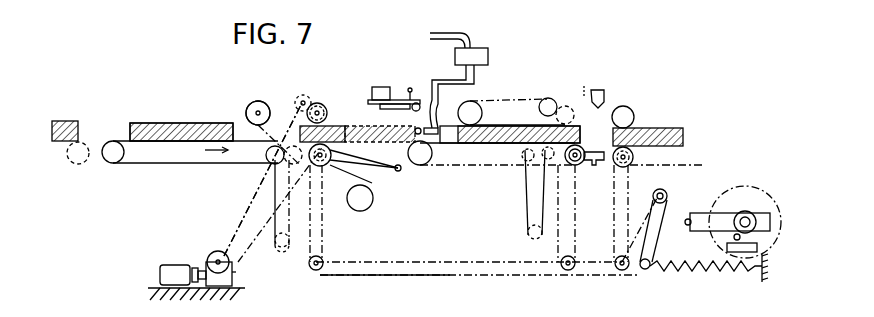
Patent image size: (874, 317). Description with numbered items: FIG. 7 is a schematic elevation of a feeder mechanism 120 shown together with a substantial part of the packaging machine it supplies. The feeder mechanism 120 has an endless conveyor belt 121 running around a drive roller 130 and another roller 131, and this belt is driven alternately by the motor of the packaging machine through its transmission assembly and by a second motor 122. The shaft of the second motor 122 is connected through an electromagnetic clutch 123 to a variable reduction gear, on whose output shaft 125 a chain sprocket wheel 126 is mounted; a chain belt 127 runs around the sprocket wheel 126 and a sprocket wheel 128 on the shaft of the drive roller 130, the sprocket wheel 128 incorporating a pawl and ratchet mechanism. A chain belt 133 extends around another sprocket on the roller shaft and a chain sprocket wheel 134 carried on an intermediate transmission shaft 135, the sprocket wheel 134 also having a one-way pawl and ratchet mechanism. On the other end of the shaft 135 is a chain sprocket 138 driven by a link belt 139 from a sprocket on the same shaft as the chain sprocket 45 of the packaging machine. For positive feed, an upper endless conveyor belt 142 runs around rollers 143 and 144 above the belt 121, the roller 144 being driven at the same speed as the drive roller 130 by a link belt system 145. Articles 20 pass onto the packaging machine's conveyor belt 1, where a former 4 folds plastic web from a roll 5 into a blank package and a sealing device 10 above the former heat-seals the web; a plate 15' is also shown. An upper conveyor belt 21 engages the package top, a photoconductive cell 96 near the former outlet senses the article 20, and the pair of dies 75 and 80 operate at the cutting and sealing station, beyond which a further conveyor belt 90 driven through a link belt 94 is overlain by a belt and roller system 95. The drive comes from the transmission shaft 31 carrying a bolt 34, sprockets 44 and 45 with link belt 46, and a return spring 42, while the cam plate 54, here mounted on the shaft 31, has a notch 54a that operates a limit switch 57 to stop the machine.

The endless conveyor belt 1 is at (467, 158).
The former 4 is at (385, 137).
The roll 5 is at (373, 203).
The sealing device 10 is at (397, 90).
The plate 15' is at (376, 114).
The article 20 is at (162, 127).
The endless conveyor belt 21 is at (505, 106).
The transmission shaft 31 is at (745, 211).
The bolt 34 is at (687, 226).
The return spring 42 is at (692, 268).
The chain sprocket 44 is at (622, 270).
The chain sprocket 45 is at (568, 270).
The link belt 46 is at (640, 268).
The control cam 54 is at (748, 215).
The notch 54a is at (740, 232).
The limit switch 57 is at (748, 266).
The die 75 is at (597, 166).
The die 80 is at (598, 90).
The conveyor belt 90 is at (672, 147).
The link belt 94 is at (614, 240).
The belt and roller system 95 is at (624, 106).
The photoconductive cell 96 is at (428, 164).
The feeder mechanism 120 is at (143, 118).
The endless conveyor belt 121 is at (162, 164).
The second motor 122 is at (160, 275).
The electromagnetic clutch 123 is at (200, 290).
The output shaft 125 is at (232, 266).
The chain sprocket wheel 126 is at (212, 256).
The chain belt 127 is at (248, 222).
The sprocket wheel 128 is at (324, 162).
The drive roller 130 is at (338, 115).
The roller 131 is at (110, 163).
The chain belt 133 is at (323, 240).
The chain sprocket wheel 134 is at (335, 275).
The intermediate transmission shaft 135 is at (315, 271).
The chain sprocket 138 is at (358, 278).
The link belt 139 is at (355, 268).
The upper endless conveyor belt 142 is at (275, 120).
The roller 143 is at (248, 112).
The roller 144 is at (320, 102).
The link belt system 145 is at (486, 56).